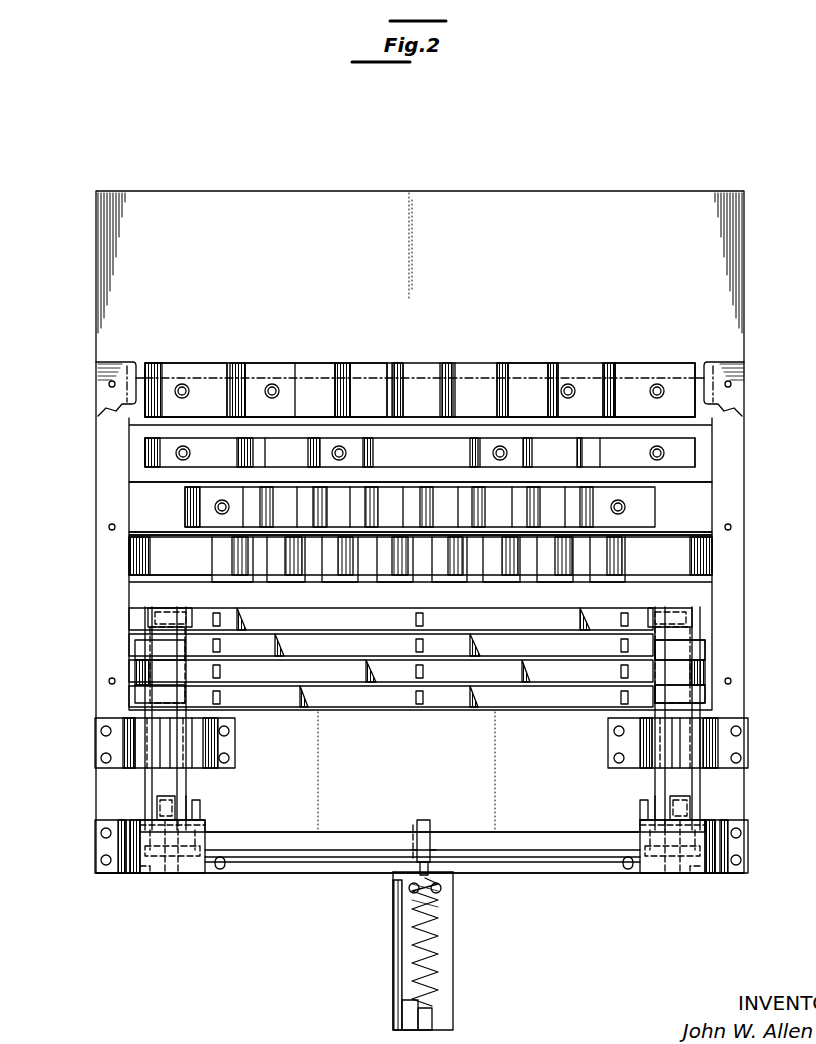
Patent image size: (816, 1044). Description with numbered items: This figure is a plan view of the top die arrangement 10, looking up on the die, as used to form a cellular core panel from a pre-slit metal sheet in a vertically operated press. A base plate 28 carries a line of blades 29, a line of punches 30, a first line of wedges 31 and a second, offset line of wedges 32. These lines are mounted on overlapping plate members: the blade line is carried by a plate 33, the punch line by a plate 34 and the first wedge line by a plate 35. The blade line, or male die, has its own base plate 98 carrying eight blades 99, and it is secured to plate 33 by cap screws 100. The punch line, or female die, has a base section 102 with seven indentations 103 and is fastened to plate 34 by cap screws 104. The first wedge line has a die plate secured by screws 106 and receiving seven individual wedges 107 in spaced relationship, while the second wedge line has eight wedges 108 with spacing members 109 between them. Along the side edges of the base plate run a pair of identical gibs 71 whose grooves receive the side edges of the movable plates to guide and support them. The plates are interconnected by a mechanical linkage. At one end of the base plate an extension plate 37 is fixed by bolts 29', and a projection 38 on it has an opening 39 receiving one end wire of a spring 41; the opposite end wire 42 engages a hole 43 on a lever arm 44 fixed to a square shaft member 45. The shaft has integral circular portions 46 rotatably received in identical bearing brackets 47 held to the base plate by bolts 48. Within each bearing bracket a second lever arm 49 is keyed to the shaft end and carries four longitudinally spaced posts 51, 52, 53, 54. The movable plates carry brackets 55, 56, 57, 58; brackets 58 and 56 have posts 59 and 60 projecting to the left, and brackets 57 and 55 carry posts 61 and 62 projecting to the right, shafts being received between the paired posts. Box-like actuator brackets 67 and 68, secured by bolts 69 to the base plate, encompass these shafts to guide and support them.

The top die arrangement 10 is at (342, 870).
The base plate 28 is at (326, 200).
The line of blades 29 is at (376, 365).
The bolts 29' is at (425, 902).
The line of punches 30 is at (240, 476).
The first line of wedges 31 is at (183, 497).
The second line of wedges 32 is at (192, 566).
The plate 33 is at (696, 363).
The plate 34 is at (703, 477).
The plate 35 is at (714, 525).
The extension plate 37 is at (444, 974).
The projection 38 is at (434, 1012).
The opening 39 is at (400, 1014).
The spring 41 is at (410, 946).
The end wire 42 is at (454, 872).
The hole 43 is at (413, 846).
The lever arm 44 is at (423, 832).
The square shaft member 45 is at (458, 846).
The circular portions 46 is at (184, 868).
The bearing brackets 47 is at (198, 820).
The bolts 48 is at (99, 860).
The second lever arm 49 is at (158, 798).
The post 51 is at (142, 868).
The post 52 is at (210, 823).
The post 53 is at (135, 822).
The post 54 is at (196, 806).
The bracket 55 is at (656, 686).
The bracket 56 is at (152, 670).
The bracket 57 is at (656, 636).
The bracket 58 is at (158, 612).
The post 59 is at (184, 612).
The post 60 is at (612, 670).
The post 61 is at (706, 642).
The post 62 is at (706, 692).
The actuator bracket 67 is at (608, 748).
The actuator bracket 68 is at (236, 748).
The bolts 69 is at (99, 757).
The gibs 71 is at (118, 362).
The base plate 98 is at (618, 363).
The blades 99 is at (237, 363).
The cap screws 100 is at (180, 380).
The base section 102 is at (143, 447).
The indentations 103 is at (318, 453).
The cap screws 104 is at (194, 428).
The screws 106 is at (214, 508).
The wedges 107 is at (264, 487).
The wedges 108 is at (220, 553).
The spacing members 109 is at (262, 576).